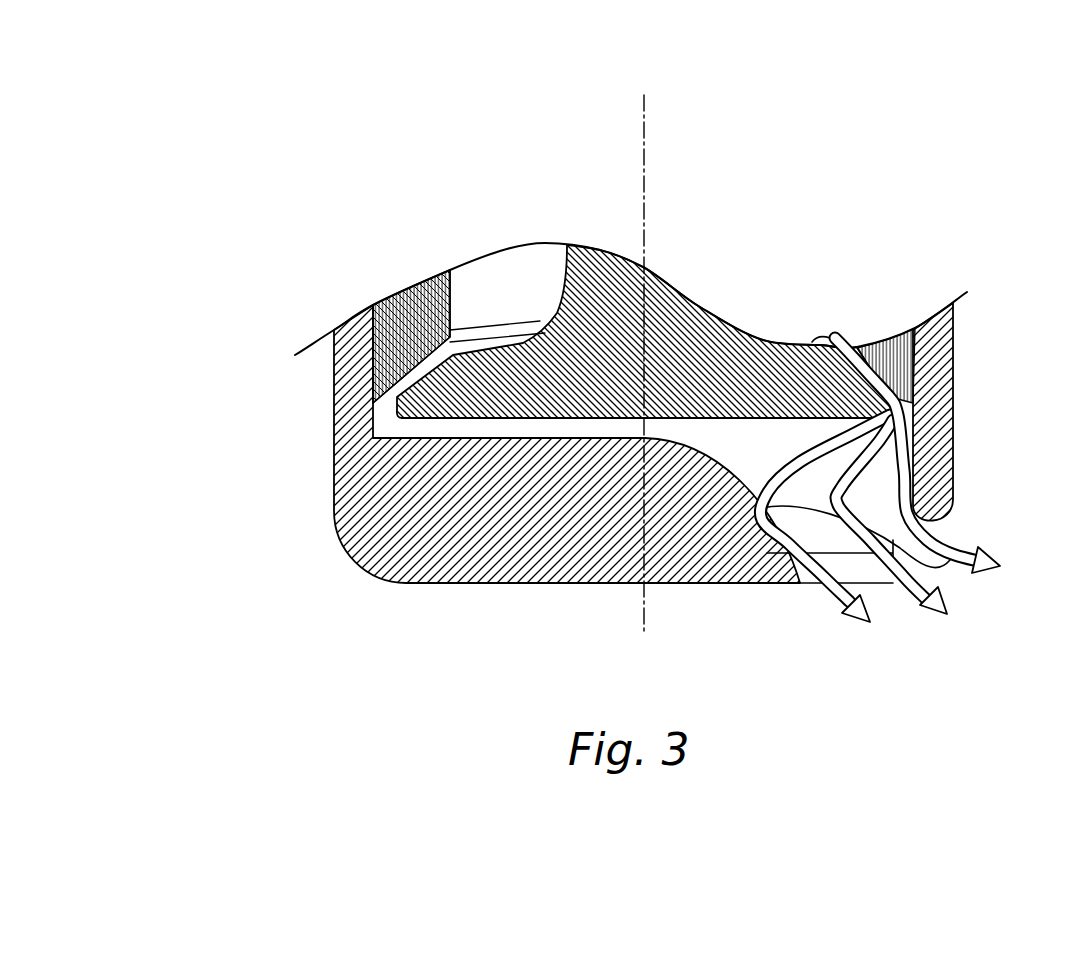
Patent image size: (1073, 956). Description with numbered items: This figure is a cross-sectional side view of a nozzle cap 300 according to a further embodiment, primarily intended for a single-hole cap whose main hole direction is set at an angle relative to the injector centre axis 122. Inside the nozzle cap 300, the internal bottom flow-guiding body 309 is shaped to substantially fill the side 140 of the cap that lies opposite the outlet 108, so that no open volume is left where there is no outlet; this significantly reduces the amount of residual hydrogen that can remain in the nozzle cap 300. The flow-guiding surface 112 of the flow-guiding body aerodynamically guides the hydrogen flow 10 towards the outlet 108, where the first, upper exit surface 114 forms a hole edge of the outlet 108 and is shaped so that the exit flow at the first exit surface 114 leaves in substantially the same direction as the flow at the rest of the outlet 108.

The nozzle cap 300 is at (577, 456).
The side of the nozzle cap opposite the outlet 140 is at (455, 527).
The central axis 122 is at (644, 177).
The internal bottom flow-guiding body 309 is at (745, 445).
The outlet 108 is at (893, 543).
The fluid stream 10 is at (806, 583).
The flow-guiding surface 112 is at (882, 580).
The first exit surface 114 is at (987, 543).